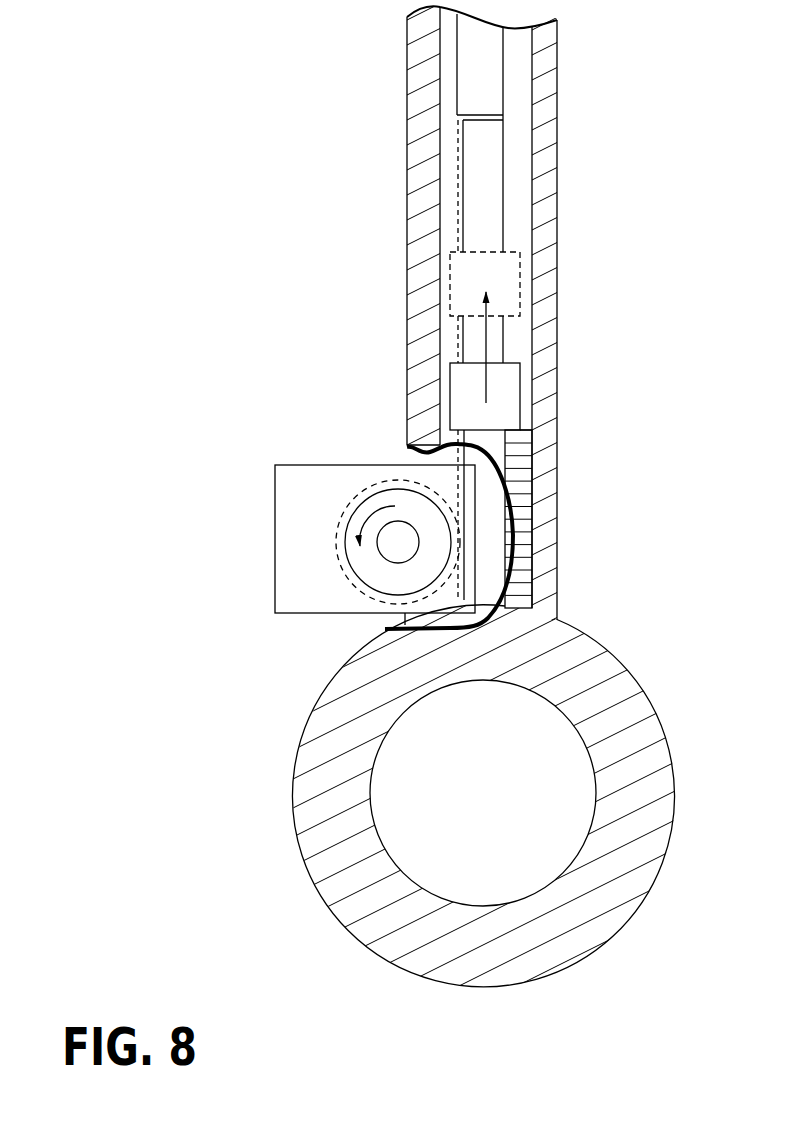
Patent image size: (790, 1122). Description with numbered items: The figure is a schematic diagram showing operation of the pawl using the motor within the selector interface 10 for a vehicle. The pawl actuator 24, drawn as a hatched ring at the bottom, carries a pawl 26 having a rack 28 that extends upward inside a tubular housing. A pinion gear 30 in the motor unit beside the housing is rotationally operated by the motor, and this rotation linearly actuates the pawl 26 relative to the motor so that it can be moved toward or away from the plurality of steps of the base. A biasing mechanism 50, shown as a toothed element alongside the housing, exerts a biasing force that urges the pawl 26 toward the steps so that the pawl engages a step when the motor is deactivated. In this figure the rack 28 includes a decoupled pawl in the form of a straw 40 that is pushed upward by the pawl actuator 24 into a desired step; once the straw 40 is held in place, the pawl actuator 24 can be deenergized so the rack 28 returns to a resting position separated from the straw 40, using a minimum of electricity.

The selector interface 10 is at (345, 102).
The straw 40 is at (485, 62).
The pawl 26 is at (530, 290).
The rack 28 is at (452, 340).
The pinion gear 30 is at (373, 462).
The biasing mechanism 50 is at (530, 467).
The pawl actuator 24 is at (298, 657).